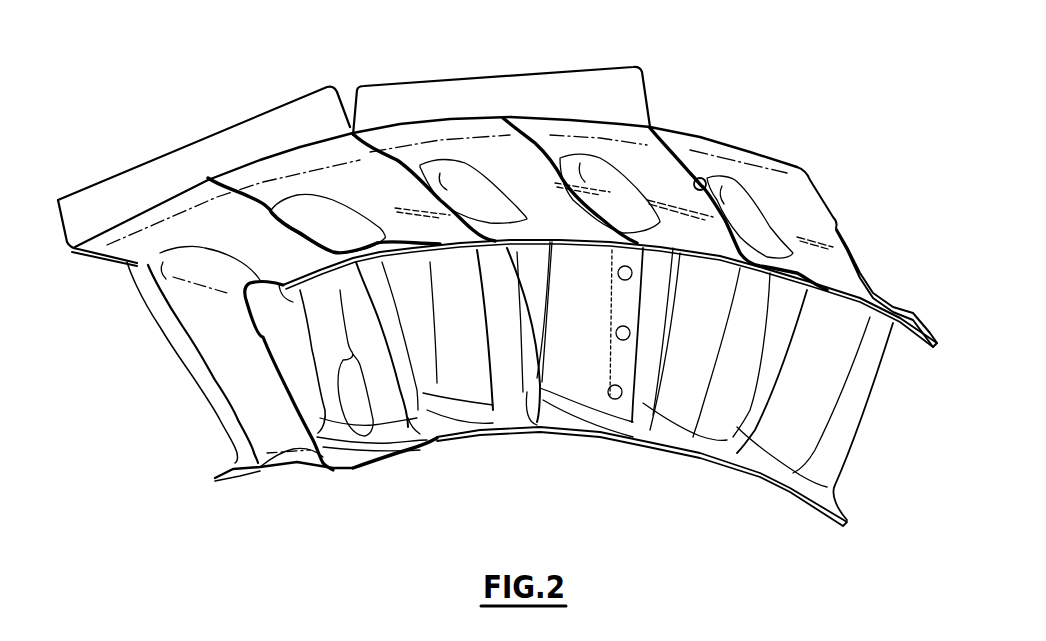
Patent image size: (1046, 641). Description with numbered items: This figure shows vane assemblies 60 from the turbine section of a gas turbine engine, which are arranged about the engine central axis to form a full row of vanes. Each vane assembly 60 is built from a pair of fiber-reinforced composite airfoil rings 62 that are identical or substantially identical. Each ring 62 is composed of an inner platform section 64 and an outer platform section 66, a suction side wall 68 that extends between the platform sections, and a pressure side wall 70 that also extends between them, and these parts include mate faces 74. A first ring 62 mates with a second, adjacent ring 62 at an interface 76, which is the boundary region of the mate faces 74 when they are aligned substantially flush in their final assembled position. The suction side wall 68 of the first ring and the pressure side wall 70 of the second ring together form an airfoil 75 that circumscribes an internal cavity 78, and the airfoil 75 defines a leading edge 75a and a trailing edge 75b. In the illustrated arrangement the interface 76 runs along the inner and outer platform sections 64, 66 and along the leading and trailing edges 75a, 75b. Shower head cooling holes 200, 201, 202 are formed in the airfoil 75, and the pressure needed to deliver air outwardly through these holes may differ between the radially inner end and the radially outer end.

The vane assembly 60 is at (195, 145).
The fiber-reinforced composite airfoil ring 62 is at (296, 478).
The inner platform section 64 is at (337, 423).
The outer platform section 66 is at (300, 260).
The suction side wall 68 is at (410, 333).
The pressure side wall 70 is at (330, 327).
The mate face 74 is at (542, 442).
The airfoil 75 is at (537, 328).
The leading edge 75a is at (405, 365).
The trailing edge 75b is at (280, 287).
The interface 76 is at (259, 183).
The internal cavity 78 is at (458, 196).
The shower head cooling hole 200 is at (630, 266).
The shower head cooling hole 201 is at (630, 332).
The shower head cooling hole 202 is at (622, 391).